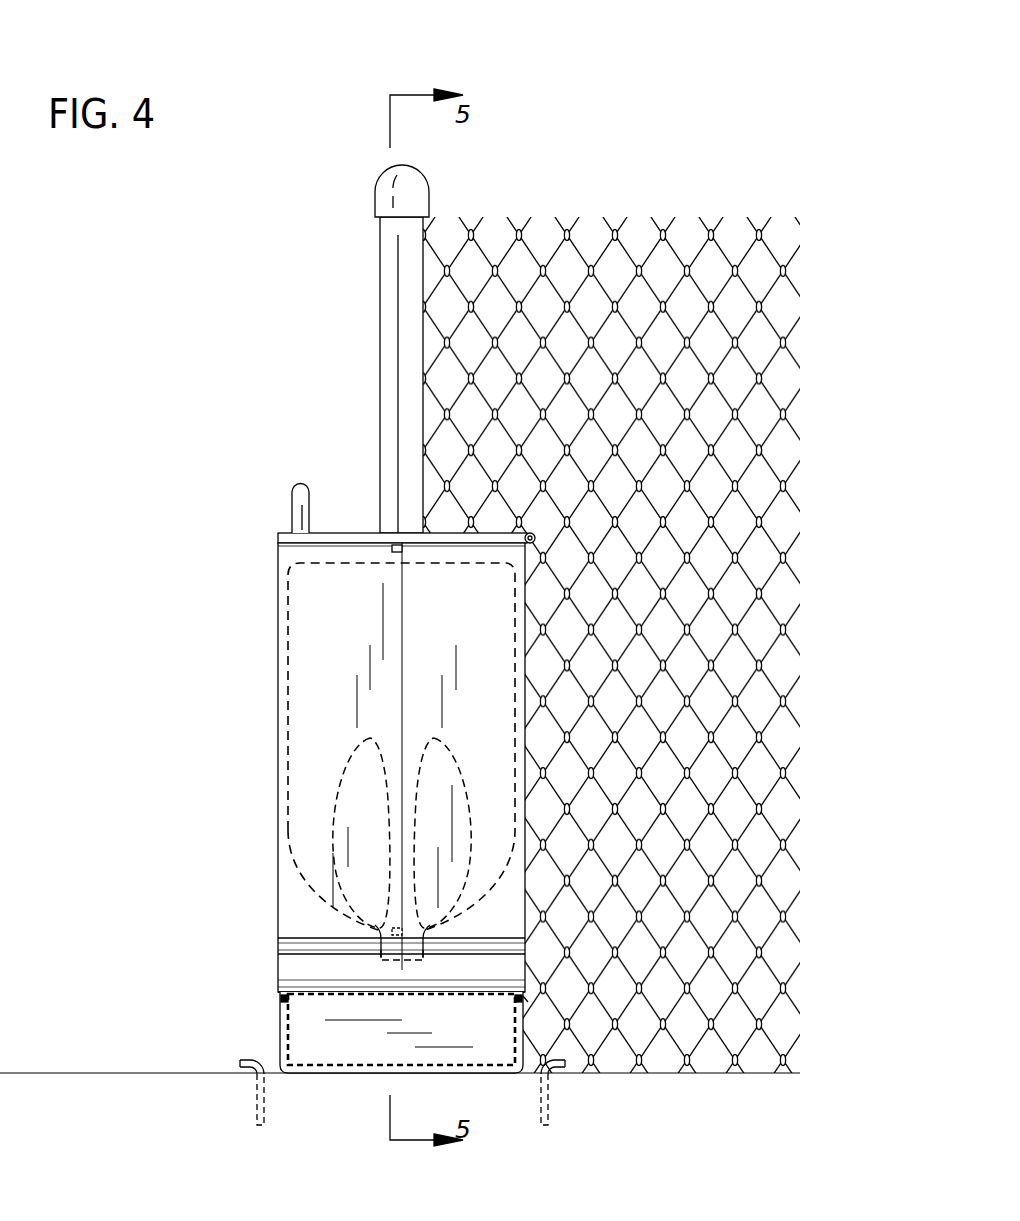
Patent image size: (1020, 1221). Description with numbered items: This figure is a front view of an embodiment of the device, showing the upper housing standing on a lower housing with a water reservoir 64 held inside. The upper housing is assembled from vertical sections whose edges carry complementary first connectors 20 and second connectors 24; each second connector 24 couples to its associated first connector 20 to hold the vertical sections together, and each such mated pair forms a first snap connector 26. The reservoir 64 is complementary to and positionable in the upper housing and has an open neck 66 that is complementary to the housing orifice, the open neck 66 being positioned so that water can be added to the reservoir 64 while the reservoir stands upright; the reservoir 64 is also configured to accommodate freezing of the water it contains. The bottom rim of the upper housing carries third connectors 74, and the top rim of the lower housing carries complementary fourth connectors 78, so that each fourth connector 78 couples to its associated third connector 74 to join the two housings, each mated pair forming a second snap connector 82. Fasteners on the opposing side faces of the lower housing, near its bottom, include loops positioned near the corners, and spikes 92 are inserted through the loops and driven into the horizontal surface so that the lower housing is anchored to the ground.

The first connector 20 is at (392, 545).
The second connector 24 is at (407, 546).
The first snap connector 26 is at (382, 929).
The reservoir 64 is at (287, 575).
The open neck 66 is at (425, 960).
The third connector 74 is at (280, 997).
The fourth connector 78 is at (281, 1003).
The second snap connector 82 is at (526, 1003).
The spike 92 is at (254, 1101).